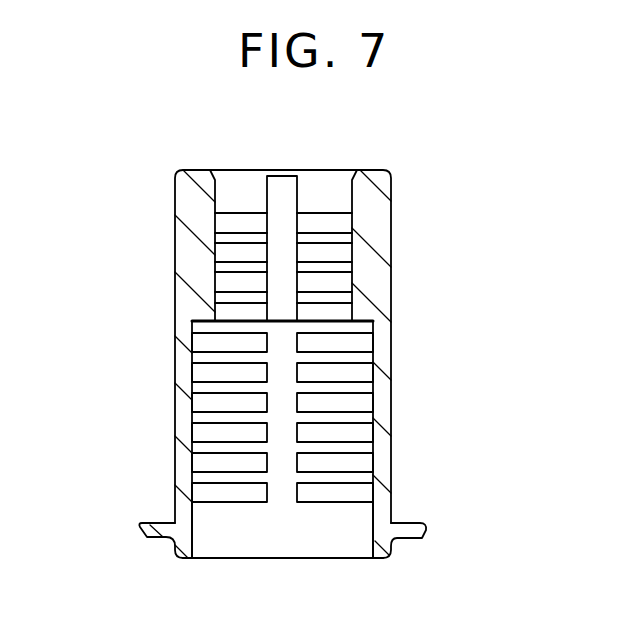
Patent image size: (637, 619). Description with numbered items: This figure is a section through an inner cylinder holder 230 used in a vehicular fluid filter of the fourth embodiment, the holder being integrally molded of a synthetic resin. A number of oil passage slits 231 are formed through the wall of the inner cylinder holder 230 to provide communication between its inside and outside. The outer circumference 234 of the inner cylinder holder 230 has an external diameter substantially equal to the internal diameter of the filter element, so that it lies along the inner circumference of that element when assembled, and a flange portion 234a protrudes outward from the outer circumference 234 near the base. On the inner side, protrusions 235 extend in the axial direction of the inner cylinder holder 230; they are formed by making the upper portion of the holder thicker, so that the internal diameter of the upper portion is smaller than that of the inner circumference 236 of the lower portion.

The inner cylinder holder 230 is at (436, 188).
The oil passage slits 231 is at (232, 471).
The outer circumference 234 is at (393, 277).
The flange portion 234a is at (413, 523).
The protrusions 235 is at (217, 185).
The inner circumference 236 is at (192, 432).